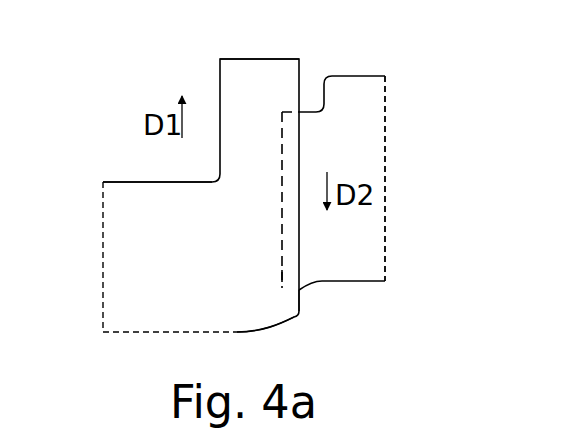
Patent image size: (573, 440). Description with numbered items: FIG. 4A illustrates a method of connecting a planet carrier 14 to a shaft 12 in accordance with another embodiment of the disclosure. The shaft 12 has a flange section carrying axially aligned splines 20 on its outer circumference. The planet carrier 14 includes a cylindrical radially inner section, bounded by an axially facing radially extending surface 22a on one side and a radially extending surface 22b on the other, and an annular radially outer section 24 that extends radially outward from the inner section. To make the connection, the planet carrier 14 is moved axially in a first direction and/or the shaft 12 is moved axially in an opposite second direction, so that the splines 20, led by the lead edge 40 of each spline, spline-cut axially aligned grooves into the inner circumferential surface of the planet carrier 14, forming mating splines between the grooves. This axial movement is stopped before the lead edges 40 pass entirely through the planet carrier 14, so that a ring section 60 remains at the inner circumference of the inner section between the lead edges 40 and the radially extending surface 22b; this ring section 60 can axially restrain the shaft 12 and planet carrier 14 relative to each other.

The planet carrier 14 is at (117, 91).
The radially outer section 24 is at (119, 176).
The axially facing radially extending surface 22a is at (248, 59).
The radially extending surface 22b is at (292, 317).
The shaft 12 is at (383, 72).
The splines 20 is at (288, 170).
The lead edge 40 is at (285, 289).
The ring section 60 is at (290, 300).